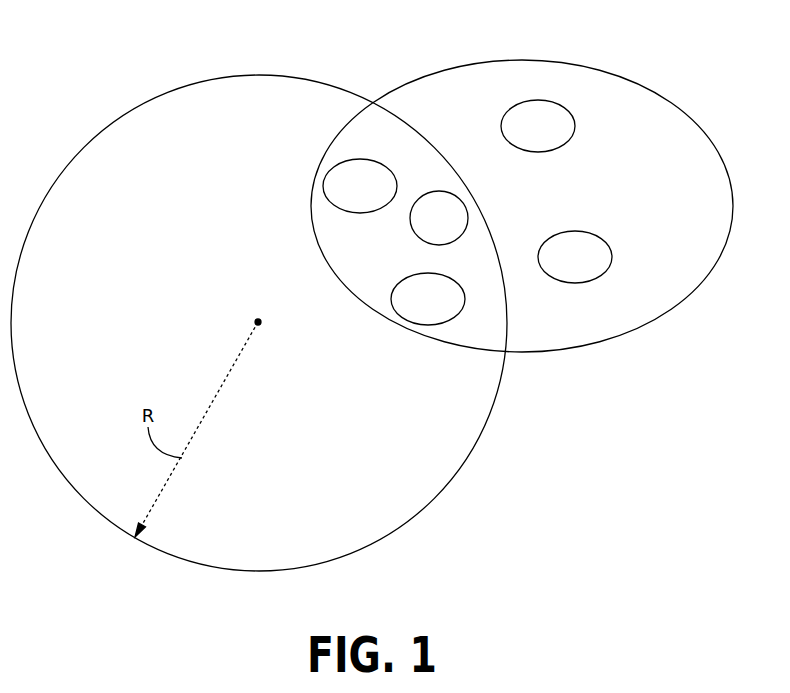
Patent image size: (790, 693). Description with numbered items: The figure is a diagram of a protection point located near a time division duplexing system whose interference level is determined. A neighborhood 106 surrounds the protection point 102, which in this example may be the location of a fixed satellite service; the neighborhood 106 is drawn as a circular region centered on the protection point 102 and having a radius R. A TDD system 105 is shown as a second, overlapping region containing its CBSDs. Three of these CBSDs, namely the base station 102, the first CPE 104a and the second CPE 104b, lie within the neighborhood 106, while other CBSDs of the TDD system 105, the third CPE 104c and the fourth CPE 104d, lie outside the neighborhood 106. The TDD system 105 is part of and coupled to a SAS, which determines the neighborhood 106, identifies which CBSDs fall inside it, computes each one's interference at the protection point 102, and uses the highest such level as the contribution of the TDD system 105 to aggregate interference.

The protection point / base station 102 is at (410, 210).
The first CPE (CPE1) 104a is at (397, 183).
The second CPE (CPE2) 104b is at (465, 297).
The third CPE (CPE3) 104c is at (575, 122).
The fourth CPE (CPE4) 104d is at (612, 252).
The TDD system 105 is at (533, 57).
The neighborhood 106 is at (493, 407).